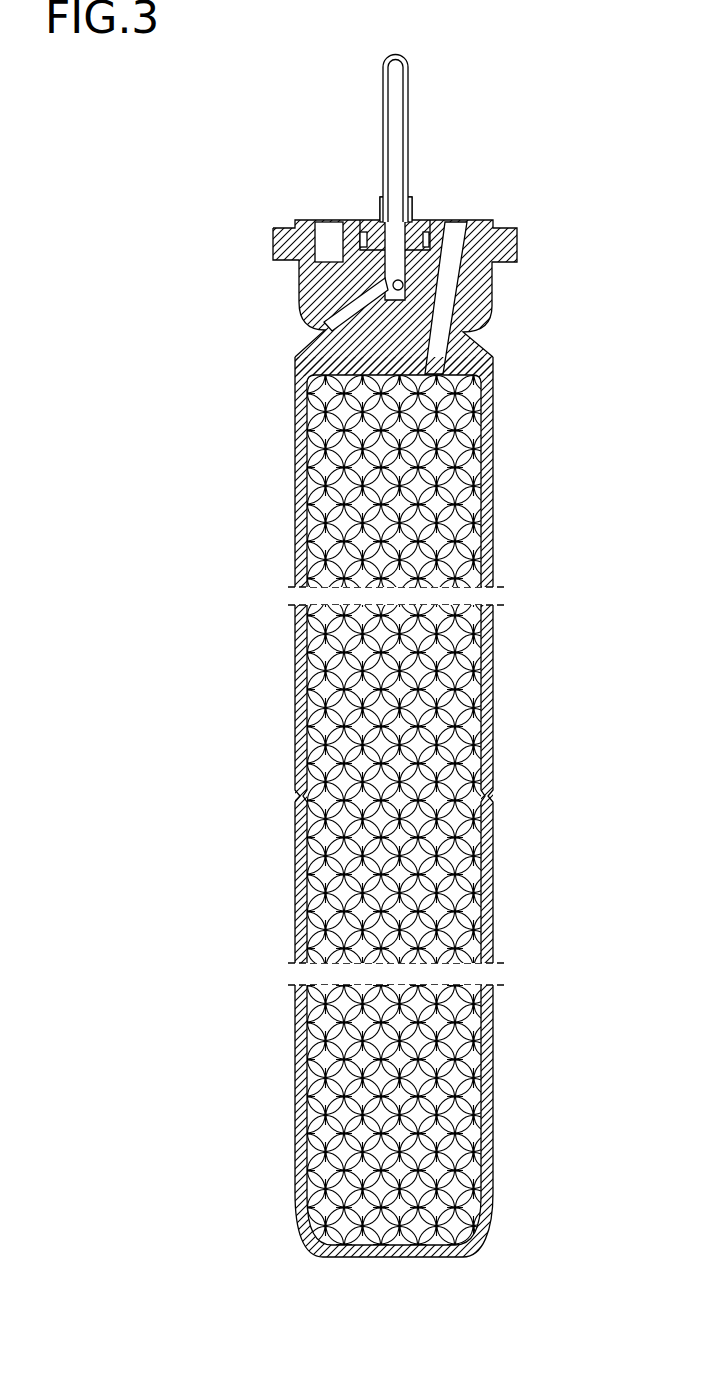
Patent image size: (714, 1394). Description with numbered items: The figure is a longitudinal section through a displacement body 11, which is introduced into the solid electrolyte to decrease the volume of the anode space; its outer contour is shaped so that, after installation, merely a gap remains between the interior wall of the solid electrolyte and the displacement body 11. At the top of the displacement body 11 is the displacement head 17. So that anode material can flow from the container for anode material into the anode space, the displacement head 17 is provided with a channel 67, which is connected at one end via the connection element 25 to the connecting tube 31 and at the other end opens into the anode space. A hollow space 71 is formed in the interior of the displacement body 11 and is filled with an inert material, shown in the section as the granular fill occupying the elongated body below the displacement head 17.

The displacement body 11 is at (495, 428).
The displacement head 17 is at (512, 229).
The connection element 25 is at (379, 229).
The connecting tube 31 is at (400, 80).
The channel 67 is at (343, 313).
The hollow space 71 is at (457, 733).